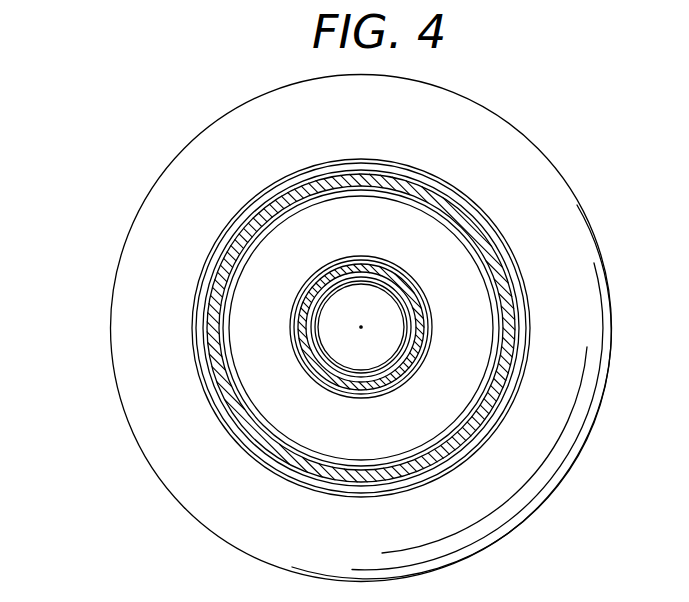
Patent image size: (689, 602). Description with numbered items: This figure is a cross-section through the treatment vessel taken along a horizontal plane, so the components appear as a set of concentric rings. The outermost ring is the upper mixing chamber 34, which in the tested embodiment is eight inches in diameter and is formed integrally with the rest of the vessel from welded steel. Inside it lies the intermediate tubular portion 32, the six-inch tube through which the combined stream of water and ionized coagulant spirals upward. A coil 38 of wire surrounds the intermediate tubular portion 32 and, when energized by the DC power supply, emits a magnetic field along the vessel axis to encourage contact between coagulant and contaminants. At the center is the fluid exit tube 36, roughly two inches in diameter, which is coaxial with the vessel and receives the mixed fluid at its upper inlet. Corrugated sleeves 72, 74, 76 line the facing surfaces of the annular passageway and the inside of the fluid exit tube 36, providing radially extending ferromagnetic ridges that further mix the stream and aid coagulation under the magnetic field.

The intermediate tubular portion 32 is at (205, 282).
The upper mixing chamber 34 is at (128, 425).
The fluid exit tube 36 is at (403, 278).
The coil 38 is at (482, 210).
The corrugated sleeve 72 is at (432, 314).
The corrugated sleeve 74 is at (242, 262).
The corrugated sleeve 76 is at (398, 345).